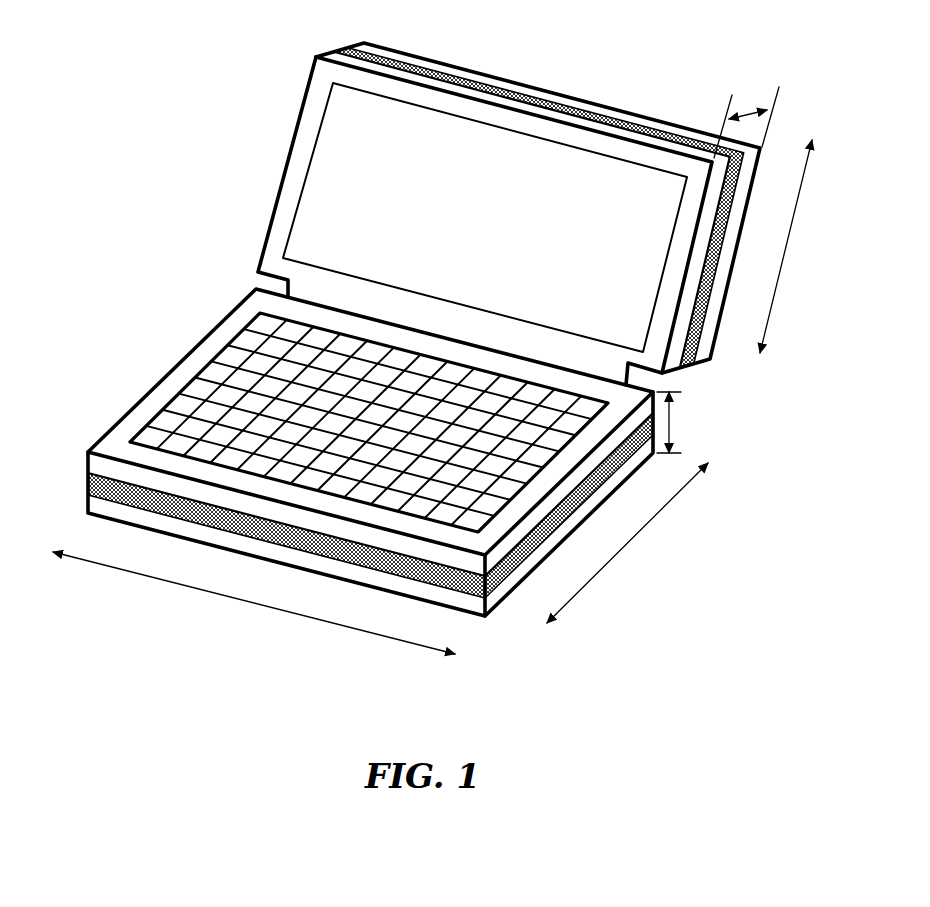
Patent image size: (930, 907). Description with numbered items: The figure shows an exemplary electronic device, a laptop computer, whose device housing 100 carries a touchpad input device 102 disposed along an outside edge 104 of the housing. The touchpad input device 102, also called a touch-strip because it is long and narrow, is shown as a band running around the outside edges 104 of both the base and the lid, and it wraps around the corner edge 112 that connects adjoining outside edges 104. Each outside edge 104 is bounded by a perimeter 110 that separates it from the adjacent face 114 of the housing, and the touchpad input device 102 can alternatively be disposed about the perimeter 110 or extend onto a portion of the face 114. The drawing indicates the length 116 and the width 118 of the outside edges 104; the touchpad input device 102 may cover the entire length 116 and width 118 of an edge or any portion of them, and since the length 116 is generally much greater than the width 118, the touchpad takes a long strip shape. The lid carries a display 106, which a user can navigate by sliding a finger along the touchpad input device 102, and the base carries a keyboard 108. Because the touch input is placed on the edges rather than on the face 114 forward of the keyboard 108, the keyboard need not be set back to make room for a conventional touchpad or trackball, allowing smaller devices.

The device housing 100 is at (429, 337).
The touchpad input device 102 is at (358, 50).
The outside edge 104 is at (187, 527).
The display 106 is at (317, 228).
The keyboard 108 is at (255, 386).
The perimeter 110 is at (120, 418).
The corner edge 112 is at (87, 503).
The face 114 is at (157, 402).
The length 116 is at (267, 606).
The width 118 is at (718, 257).